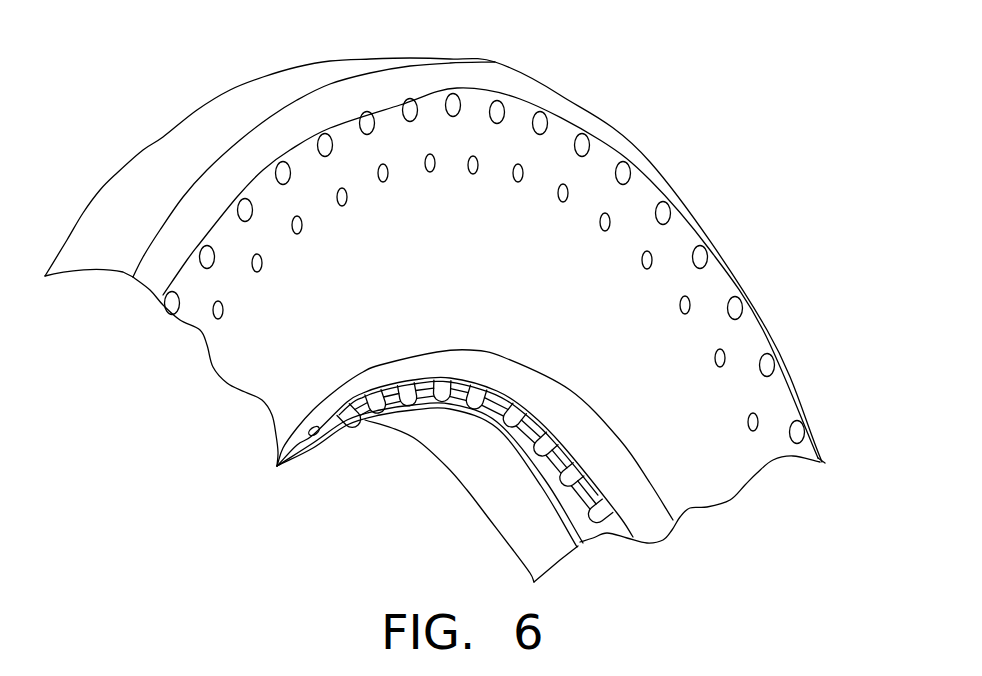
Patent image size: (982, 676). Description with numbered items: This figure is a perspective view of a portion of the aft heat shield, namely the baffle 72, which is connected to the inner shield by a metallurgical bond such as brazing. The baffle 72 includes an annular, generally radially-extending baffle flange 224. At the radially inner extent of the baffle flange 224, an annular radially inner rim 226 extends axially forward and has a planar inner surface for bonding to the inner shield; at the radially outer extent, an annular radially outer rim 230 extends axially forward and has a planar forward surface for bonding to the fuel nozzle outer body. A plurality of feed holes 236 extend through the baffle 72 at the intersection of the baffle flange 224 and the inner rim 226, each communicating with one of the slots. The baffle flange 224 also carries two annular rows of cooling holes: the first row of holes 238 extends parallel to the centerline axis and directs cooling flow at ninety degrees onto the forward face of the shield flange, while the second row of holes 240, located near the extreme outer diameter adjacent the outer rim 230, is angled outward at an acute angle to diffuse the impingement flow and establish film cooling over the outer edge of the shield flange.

The baffle 72 is at (641, 60).
The baffle flange 224 is at (243, 367).
The radially inner rim 226 is at (465, 456).
The radially outer rim 230 is at (173, 146).
The feed holes 236 is at (598, 522).
The first row of holes 238 is at (643, 265).
The second row of holes 240 is at (626, 168).